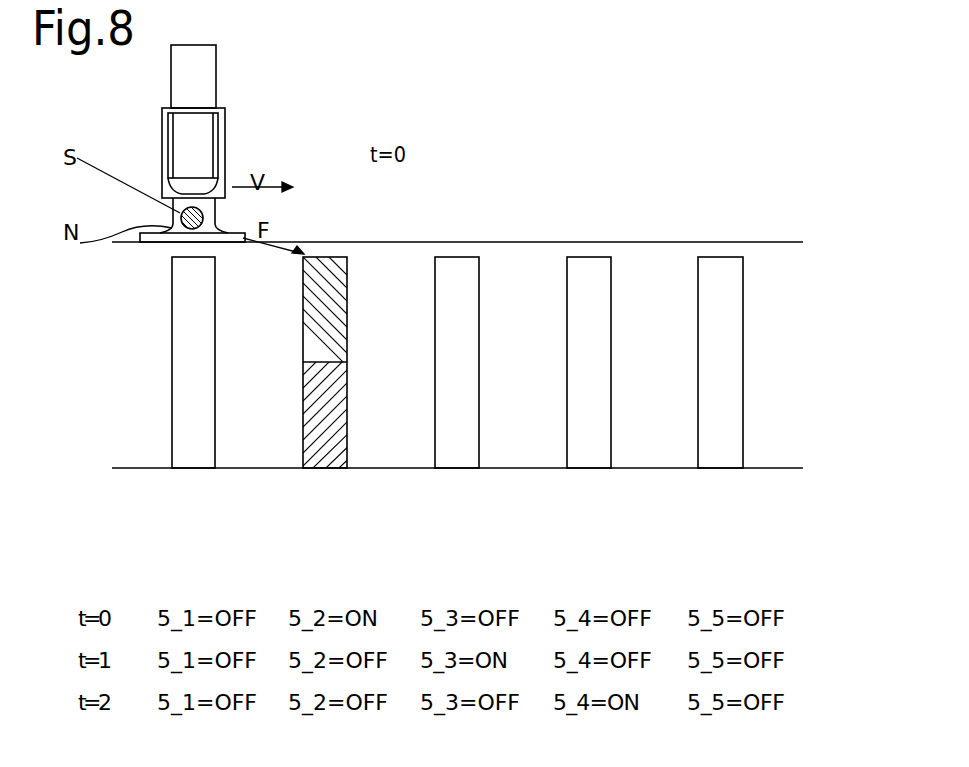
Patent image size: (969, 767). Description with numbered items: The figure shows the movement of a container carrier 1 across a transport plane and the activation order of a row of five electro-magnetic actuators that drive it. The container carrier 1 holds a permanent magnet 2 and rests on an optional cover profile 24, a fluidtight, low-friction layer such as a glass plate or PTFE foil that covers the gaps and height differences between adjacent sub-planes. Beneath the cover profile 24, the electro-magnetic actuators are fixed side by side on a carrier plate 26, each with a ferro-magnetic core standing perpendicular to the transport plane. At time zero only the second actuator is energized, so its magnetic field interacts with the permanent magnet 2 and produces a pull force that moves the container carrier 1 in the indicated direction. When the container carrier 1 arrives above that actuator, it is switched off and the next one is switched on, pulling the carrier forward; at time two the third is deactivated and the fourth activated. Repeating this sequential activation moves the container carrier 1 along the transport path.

The container carrier 1 is at (154, 143).
The permanent magnet 2 is at (178, 220).
The cover profile 24 is at (688, 242).
The carrier plate 26 is at (775, 470).